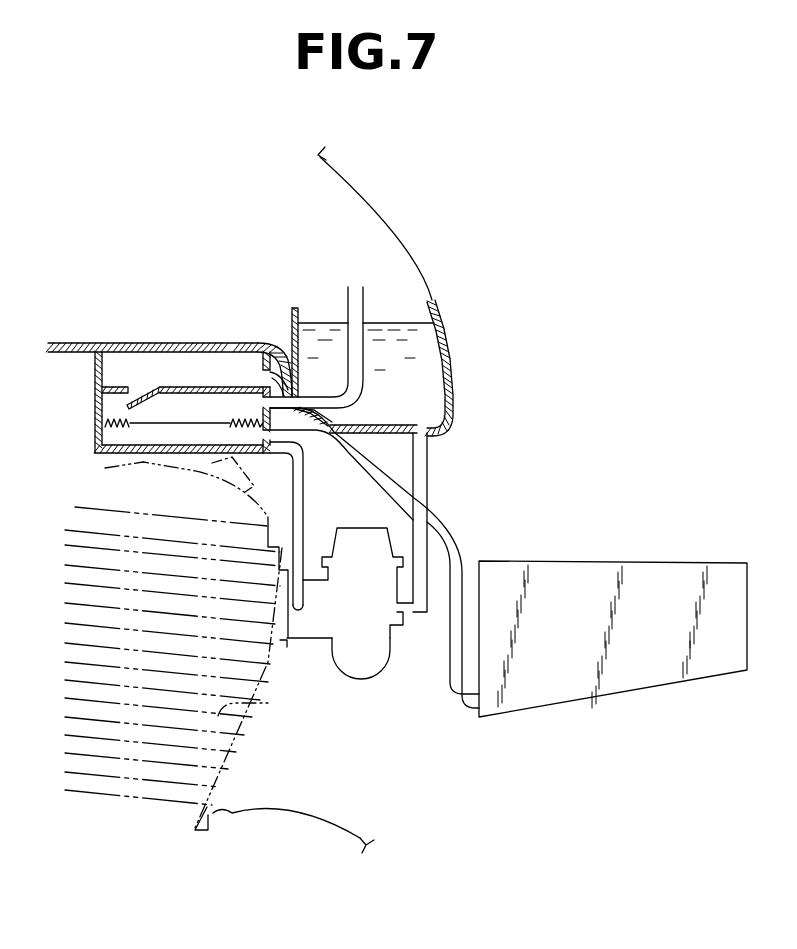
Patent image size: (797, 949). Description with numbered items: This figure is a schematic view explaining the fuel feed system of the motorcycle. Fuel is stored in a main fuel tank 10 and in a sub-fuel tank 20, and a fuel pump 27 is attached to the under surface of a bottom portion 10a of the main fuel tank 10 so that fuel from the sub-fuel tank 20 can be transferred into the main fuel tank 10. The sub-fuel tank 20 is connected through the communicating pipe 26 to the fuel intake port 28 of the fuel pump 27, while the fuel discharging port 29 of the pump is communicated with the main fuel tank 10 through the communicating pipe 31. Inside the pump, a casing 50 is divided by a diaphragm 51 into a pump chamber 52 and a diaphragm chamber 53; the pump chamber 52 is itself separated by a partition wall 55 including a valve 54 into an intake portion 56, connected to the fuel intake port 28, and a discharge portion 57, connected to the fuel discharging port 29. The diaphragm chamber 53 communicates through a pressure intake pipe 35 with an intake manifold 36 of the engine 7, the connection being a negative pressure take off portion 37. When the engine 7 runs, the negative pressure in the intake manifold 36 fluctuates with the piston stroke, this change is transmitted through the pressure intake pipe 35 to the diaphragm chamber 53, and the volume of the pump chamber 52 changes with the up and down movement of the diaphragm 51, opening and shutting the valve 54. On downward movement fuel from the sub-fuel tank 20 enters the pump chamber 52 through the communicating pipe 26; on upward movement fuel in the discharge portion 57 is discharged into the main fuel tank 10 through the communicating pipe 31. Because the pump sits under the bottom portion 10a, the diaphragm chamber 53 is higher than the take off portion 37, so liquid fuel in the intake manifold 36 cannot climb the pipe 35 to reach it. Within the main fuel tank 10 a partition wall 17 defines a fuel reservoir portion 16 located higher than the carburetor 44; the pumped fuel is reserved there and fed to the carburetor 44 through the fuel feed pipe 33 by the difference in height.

The engine 7 is at (197, 705).
The main fuel tank 10 is at (383, 210).
The bottom portion 10a is at (72, 342).
The fuel reservoir portion 16 is at (433, 367).
The partition wall 17 is at (298, 310).
The sub-fuel tank 20 is at (580, 567).
The communicating pipe 26 is at (450, 527).
The fuel pump 27 is at (93, 388).
The fuel intake port 28 is at (268, 343).
The fuel discharging port 29 is at (262, 362).
The communicating pipe 31 is at (360, 397).
The fuel feed pipe 33 is at (428, 472).
The pressure intake pipe 35 is at (304, 493).
The intake manifold 36 is at (322, 627).
The negative pressure take off portion 37 is at (297, 613).
The carburetor 44 is at (378, 663).
The casing 50 is at (97, 417).
The diaphragm 51 is at (127, 445).
The pump chamber 52 is at (218, 405).
The diaphragm chamber 53 is at (180, 433).
The valve 54 is at (145, 397).
The partition wall 55 is at (193, 387).
The intake portion 56 is at (182, 379).
The discharge portion 57 is at (206, 416).